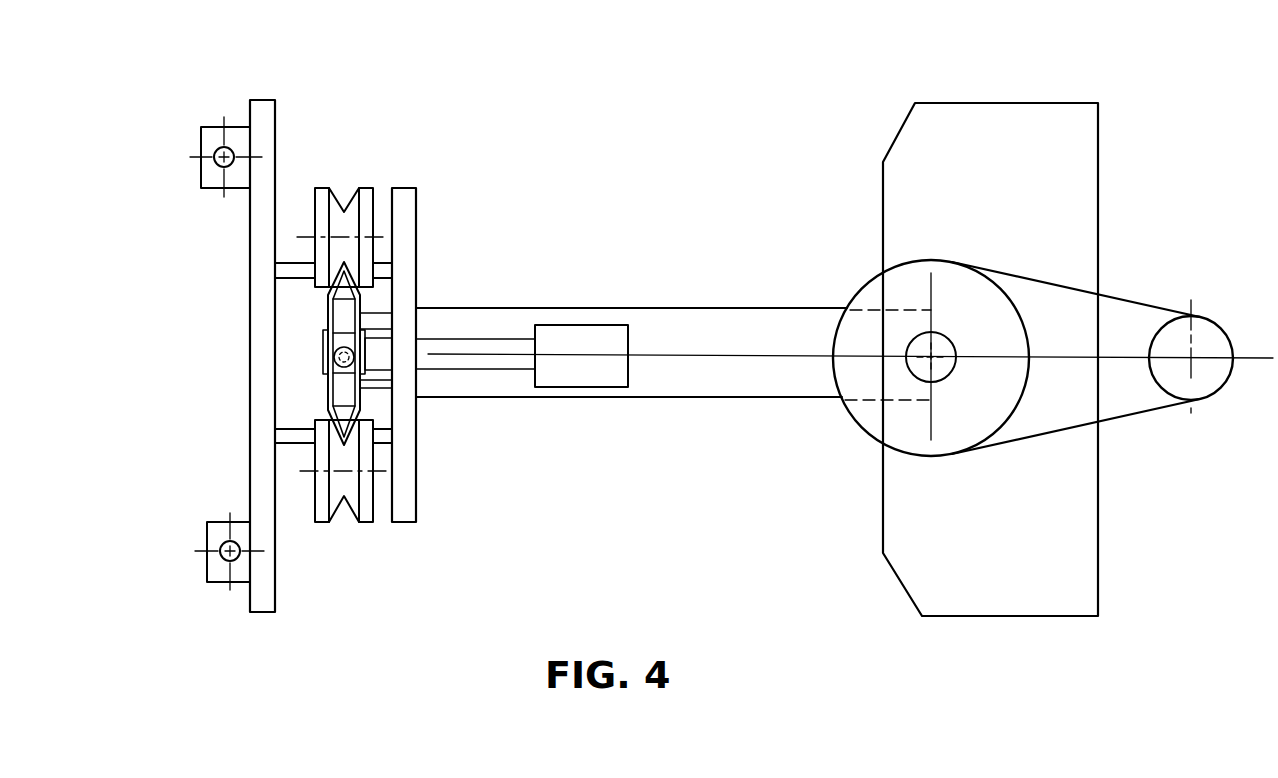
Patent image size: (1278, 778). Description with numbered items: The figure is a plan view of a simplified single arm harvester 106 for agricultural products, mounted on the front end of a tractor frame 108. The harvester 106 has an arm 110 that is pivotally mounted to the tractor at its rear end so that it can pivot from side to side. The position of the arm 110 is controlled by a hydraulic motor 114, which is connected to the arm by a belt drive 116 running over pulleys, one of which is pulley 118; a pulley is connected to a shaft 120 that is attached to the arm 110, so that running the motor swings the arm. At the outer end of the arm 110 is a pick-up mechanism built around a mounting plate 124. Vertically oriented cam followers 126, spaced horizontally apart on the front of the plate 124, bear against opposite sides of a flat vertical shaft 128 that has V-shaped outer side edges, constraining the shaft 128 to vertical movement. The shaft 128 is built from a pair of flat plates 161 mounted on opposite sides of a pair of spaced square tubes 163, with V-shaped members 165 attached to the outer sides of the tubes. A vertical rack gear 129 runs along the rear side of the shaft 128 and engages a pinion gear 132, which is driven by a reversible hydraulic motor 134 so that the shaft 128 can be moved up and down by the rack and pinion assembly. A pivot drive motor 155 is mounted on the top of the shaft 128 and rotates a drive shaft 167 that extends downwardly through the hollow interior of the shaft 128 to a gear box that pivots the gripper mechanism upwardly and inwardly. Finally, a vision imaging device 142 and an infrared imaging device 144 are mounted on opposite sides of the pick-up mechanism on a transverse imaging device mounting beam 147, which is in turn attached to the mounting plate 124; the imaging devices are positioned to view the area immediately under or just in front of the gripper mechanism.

The single arm harvester 106 is at (546, 480).
The tractor frame 108 is at (1075, 101).
The arm 110 is at (687, 400).
The hydraulic motor 114 is at (1221, 322).
The belt drive 116 is at (1132, 420).
The pulley 118 is at (862, 283).
The shaft 120 is at (925, 364).
The mounting plate 124 is at (417, 262).
The cam followers 126 is at (338, 204).
The flat vertical shaft 128 is at (360, 393).
The rack gear 129 is at (378, 313).
The pinion gear 132 is at (378, 329).
The hydraulic motor 134 is at (595, 336).
The vision imaging device 142 is at (208, 534).
The infrared imaging device 144 is at (201, 146).
The imaging device mounting beam 147 is at (247, 104).
The pivot drive motor 155 is at (323, 350).
The flat plates 161 is at (340, 318).
The square tubes 163 is at (338, 309).
The V-shaped members 165 is at (340, 296).
The drive shaft 167 is at (322, 366).